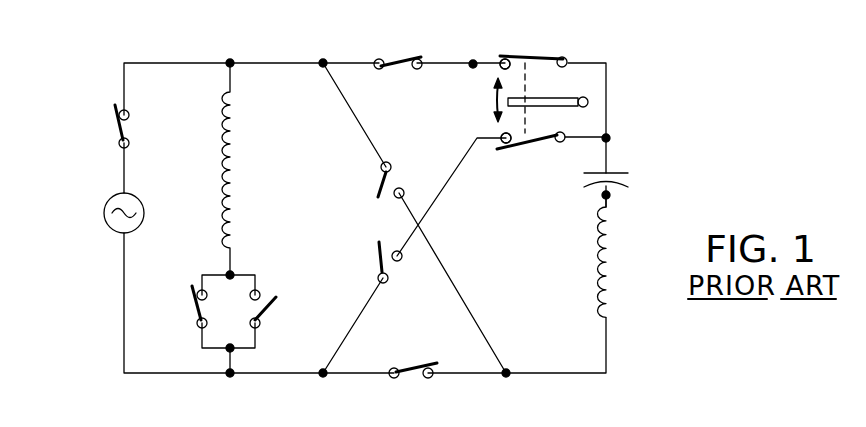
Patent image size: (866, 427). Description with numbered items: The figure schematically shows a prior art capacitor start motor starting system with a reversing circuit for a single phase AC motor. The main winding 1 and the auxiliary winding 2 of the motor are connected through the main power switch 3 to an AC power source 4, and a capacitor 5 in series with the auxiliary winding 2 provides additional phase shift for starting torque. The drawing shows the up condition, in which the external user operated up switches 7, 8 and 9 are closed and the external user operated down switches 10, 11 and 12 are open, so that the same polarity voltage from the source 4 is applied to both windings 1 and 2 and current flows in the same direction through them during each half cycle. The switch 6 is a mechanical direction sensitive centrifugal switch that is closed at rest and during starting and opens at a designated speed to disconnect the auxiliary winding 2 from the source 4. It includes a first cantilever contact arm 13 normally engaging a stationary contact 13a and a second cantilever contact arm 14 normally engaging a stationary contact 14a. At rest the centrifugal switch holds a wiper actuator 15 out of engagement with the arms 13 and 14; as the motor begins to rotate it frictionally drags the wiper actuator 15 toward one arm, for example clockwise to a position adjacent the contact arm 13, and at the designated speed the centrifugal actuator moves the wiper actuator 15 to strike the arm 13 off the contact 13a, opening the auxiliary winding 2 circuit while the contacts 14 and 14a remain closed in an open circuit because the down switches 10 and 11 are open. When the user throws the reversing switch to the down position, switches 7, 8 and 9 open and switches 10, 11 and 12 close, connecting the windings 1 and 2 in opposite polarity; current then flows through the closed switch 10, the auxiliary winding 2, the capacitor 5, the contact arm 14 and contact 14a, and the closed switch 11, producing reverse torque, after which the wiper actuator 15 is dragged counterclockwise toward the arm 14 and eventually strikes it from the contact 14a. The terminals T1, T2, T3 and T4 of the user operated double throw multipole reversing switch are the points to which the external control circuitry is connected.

The main winding 1 is at (233, 193).
The auxiliary winding 2 is at (610, 296).
The main power switch 3 is at (114, 121).
The AC power source 4 is at (104, 215).
The capacitor 5 is at (630, 184).
The switch 6 is at (484, 108).
The up switch 7 is at (402, 56).
The up switch 8 is at (412, 378).
The up switch 9 is at (191, 304).
The down switch 10 is at (378, 180).
The down switch 11 is at (376, 259).
The down switch 12 is at (262, 318).
The first cantilever contact arm 13 is at (532, 55).
The stationary contact 13a is at (500, 68).
The second cantilever contact arm 14 is at (515, 148).
The stationary contact 14a is at (500, 146).
The wiper actuator 15 is at (545, 96).
The terminal T1 is at (518, 387).
The terminal T2 is at (464, 52).
The terminal T3 is at (622, 139).
The terminal T4 is at (623, 203).